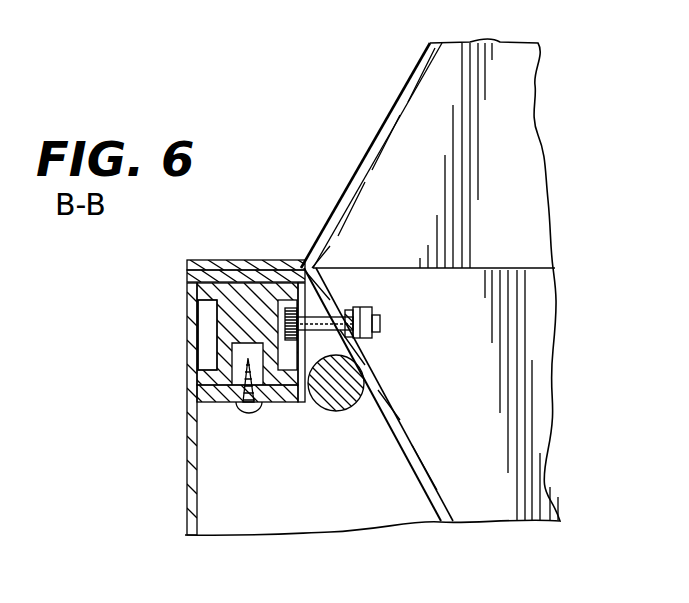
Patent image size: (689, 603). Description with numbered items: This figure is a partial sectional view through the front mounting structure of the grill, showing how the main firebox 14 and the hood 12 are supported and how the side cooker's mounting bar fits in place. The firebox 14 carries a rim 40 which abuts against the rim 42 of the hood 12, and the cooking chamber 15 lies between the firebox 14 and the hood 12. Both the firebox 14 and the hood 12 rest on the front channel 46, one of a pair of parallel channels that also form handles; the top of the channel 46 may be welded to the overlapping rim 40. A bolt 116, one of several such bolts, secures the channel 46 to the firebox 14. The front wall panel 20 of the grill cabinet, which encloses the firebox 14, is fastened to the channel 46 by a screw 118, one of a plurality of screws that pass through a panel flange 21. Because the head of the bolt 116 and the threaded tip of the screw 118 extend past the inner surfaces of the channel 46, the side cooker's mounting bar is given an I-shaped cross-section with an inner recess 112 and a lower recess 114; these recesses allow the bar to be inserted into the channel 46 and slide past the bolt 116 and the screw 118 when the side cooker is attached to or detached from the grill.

The hood 12 is at (402, 92).
The main firebox 14 is at (417, 451).
The cooking chamber 15 is at (514, 126).
The front wall panel 20 is at (198, 487).
The panel flange 21 is at (290, 398).
The rim 40 is at (282, 276).
The rim 42 is at (238, 262).
The channel 46 is at (196, 289).
The inner recess 112 is at (288, 355).
The lower recess 114 is at (233, 388).
The bolt 116 is at (374, 311).
The screw 118 is at (250, 409).